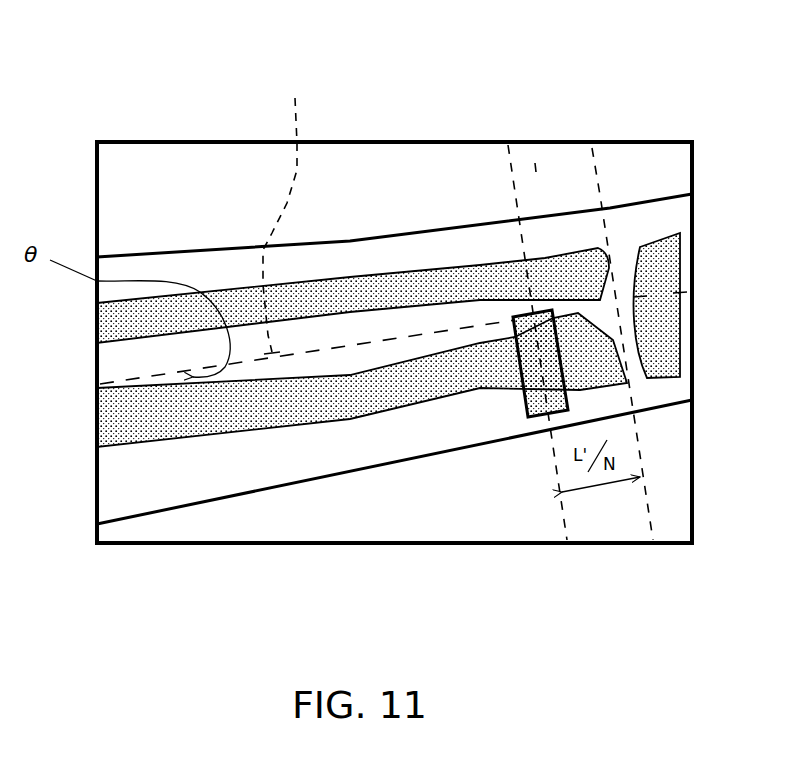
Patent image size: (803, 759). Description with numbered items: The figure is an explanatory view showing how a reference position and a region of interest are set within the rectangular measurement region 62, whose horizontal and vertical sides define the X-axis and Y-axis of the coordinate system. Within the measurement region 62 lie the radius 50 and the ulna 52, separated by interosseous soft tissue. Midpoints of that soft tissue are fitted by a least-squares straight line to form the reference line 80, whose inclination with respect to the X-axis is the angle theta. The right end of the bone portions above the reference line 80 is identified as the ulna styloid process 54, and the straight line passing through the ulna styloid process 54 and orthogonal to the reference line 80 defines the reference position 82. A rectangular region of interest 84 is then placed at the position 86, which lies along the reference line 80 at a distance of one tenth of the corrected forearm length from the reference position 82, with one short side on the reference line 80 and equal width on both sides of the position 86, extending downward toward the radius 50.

The measurement region 62 is at (193, 142).
The reference line 80 is at (286, 213).
The ulna 52 is at (288, 278).
The position 86 is at (527, 142).
The reference position 82 is at (578, 190).
The ulna styloid process 54 is at (605, 246).
The radius 50 is at (253, 432).
The region of interest 84 is at (528, 412).